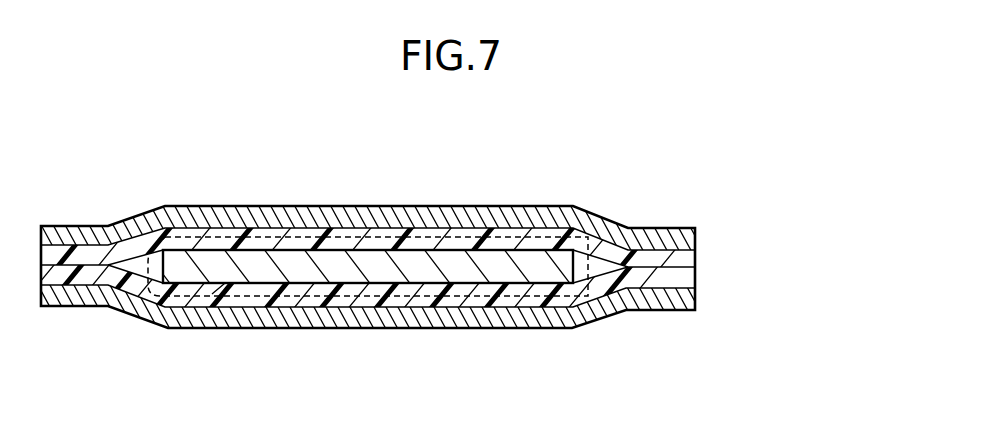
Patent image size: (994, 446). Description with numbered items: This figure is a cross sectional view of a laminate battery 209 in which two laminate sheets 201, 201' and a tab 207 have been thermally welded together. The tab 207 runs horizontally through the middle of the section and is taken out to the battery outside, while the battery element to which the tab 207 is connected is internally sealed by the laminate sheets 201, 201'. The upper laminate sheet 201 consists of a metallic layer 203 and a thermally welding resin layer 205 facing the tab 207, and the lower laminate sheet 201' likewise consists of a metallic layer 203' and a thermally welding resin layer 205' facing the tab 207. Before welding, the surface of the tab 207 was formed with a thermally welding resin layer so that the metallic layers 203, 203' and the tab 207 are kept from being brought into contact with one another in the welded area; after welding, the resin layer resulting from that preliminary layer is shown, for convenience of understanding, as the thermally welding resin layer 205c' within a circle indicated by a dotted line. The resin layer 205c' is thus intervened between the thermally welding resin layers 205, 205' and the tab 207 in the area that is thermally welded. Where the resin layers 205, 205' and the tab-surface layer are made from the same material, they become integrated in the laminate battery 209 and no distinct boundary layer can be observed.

The laminate battery 209 is at (425, 250).
The tab 207 is at (213, 265).
The metallic layer 203 is at (412, 265).
The thermally welding resin layer 205 is at (402, 265).
The laminate sheet 201 is at (419, 265).
The thermally welding resin layer 205' is at (387, 291).
The metallic layer 203' is at (412, 265).
The laminate sheet 201' is at (425, 291).
The thermally welding resin layer 205c' is at (201, 338).